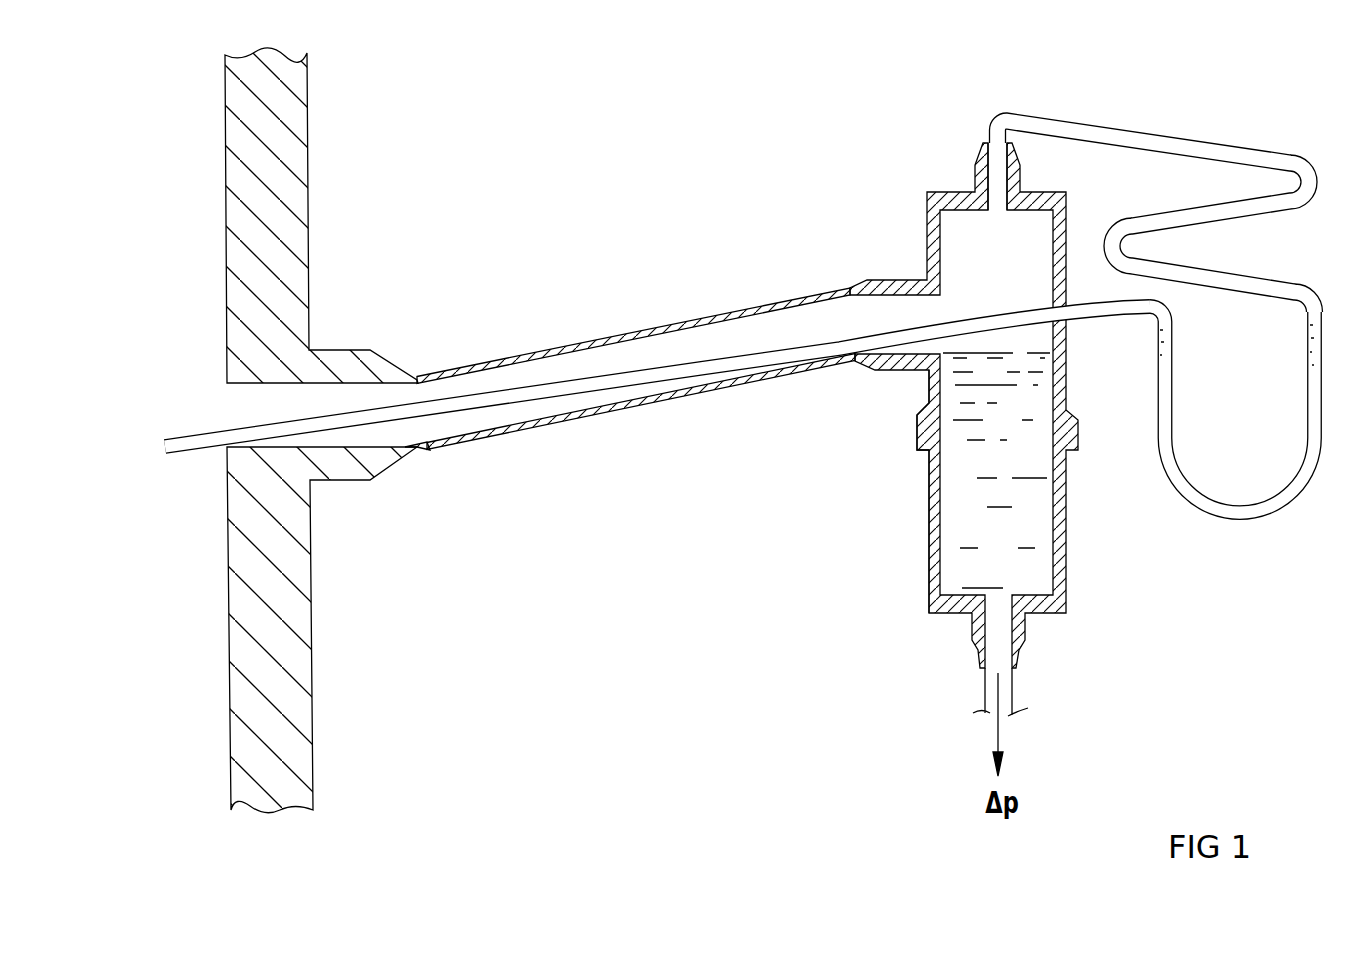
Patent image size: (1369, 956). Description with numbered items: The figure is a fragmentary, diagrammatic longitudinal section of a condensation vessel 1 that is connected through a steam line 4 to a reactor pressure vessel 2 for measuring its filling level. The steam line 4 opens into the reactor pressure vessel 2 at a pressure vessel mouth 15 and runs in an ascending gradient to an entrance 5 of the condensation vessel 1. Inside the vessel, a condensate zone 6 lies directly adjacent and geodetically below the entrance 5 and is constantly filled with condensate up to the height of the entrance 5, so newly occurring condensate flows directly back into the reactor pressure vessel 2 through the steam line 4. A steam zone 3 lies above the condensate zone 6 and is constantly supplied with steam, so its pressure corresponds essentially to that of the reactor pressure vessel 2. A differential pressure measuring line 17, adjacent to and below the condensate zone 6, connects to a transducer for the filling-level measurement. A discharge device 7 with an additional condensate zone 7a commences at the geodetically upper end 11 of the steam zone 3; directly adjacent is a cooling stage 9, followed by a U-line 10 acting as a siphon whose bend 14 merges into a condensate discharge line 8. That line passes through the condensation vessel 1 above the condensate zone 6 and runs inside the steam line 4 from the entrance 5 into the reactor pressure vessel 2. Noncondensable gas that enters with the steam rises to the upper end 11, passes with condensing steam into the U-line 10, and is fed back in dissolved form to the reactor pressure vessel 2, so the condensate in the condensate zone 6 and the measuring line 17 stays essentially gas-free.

The condensation vessel 1 is at (930, 585).
The reactor pressure vessel 2 is at (273, 670).
The steam zone 3 is at (975, 268).
The steam line 4 is at (483, 408).
The entrance 5 is at (875, 312).
The condensate zone 6 is at (970, 506).
The discharge device 7 is at (1338, 354).
The additional condensate zone 7a is at (1322, 392).
The condensate discharge line 8 is at (614, 376).
The cooling stage 9 is at (1192, 140).
The U-line 10 is at (1177, 487).
The upper end 11 is at (995, 222).
The U-bend 14 is at (1238, 520).
The pressure vessel mouth 15 is at (398, 432).
The differential pressure measuring line 17 is at (990, 688).